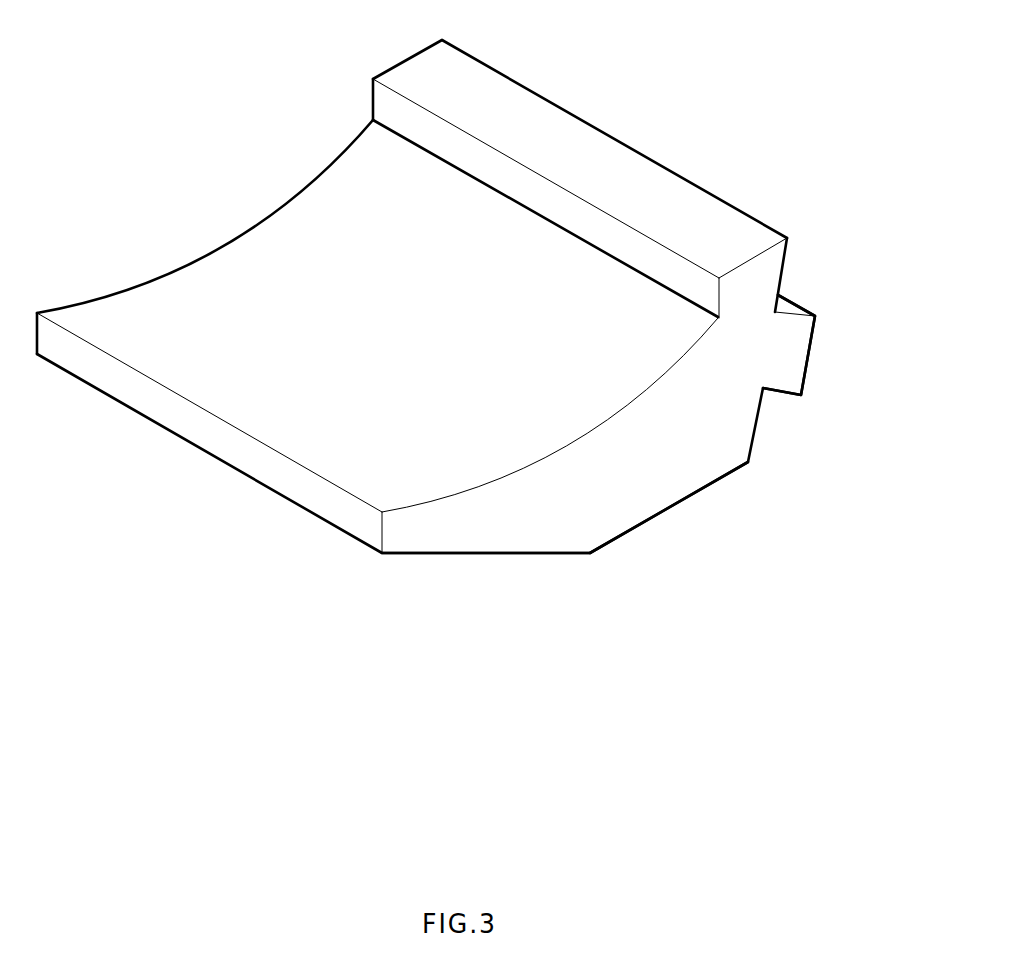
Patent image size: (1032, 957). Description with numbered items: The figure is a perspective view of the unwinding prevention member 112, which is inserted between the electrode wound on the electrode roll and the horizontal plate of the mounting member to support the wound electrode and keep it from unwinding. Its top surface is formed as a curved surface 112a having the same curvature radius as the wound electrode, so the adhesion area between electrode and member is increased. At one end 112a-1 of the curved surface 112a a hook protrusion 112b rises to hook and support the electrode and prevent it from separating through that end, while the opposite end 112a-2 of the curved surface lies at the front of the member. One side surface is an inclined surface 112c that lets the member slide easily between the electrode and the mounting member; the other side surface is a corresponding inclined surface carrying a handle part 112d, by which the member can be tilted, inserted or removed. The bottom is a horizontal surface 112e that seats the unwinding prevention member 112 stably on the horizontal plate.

The unwinding prevention member 112 is at (675, 148).
The curved surface 112a is at (232, 265).
The one end of the curved surface 112a-1 is at (408, 138).
The front end of curved surface 112a-2 is at (183, 398).
The hook protrusion 112b is at (553, 203).
The inclined surface 112c is at (495, 553).
The handle part 112d is at (793, 357).
The horizontal surface 112e is at (690, 496).